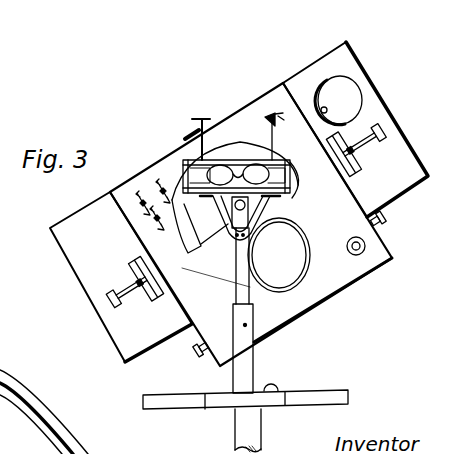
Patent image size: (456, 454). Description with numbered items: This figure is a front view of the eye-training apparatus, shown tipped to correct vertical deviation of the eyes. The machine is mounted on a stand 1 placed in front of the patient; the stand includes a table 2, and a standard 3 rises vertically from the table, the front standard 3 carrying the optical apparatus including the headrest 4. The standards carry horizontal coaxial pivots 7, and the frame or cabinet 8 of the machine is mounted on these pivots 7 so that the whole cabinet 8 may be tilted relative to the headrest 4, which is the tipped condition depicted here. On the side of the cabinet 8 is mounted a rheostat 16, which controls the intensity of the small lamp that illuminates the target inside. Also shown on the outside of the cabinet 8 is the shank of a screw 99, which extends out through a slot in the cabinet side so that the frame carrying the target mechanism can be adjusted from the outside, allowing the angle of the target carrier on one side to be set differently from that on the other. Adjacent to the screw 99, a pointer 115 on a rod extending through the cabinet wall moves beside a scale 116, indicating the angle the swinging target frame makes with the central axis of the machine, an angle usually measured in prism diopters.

The stand 1 is at (245, 420).
The table 2 is at (180, 397).
The standard 3 is at (248, 360).
The headrest 4 is at (300, 173).
The horizontal coaxial pivot 7 is at (246, 205).
The frame or cabinet 8 is at (251, 224).
The rheostat 16 is at (387, 222).
The screw 99 is at (381, 145).
The pointer 115 is at (332, 144).
The scale 116 is at (347, 173).